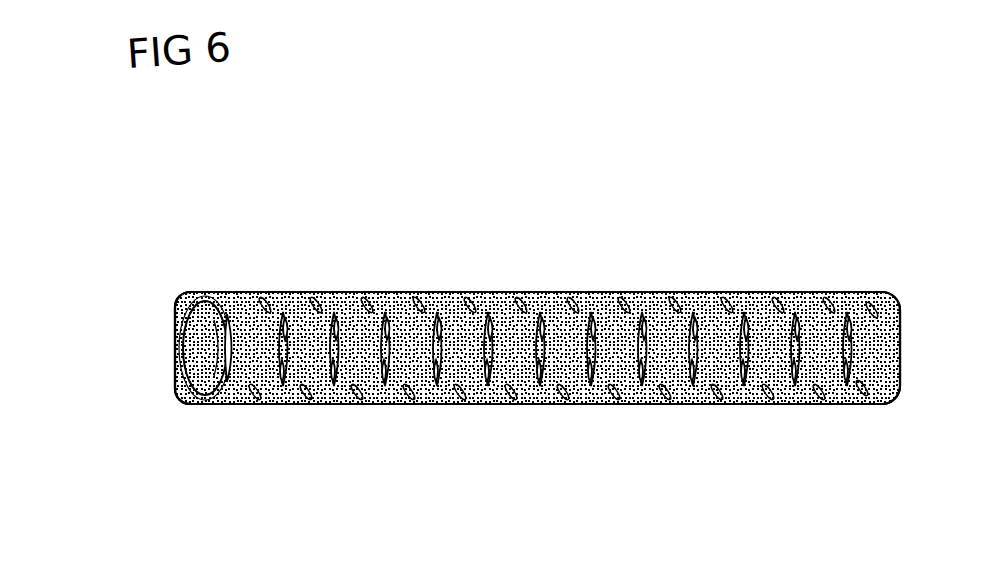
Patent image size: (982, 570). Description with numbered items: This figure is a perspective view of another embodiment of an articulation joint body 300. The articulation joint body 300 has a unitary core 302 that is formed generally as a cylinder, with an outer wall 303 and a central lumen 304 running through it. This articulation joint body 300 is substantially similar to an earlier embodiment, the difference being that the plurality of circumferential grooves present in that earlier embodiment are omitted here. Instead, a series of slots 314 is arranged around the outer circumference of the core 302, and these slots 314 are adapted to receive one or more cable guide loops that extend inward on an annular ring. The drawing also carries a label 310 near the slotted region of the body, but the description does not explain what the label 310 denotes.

The articulation joint body 300 is at (480, 291).
The unitary core 302 is at (612, 290).
The outer wall 303 is at (176, 378).
The central lumen 304 is at (180, 352).
The slots 314 is at (292, 403).
The slot openings 310 is at (733, 405).